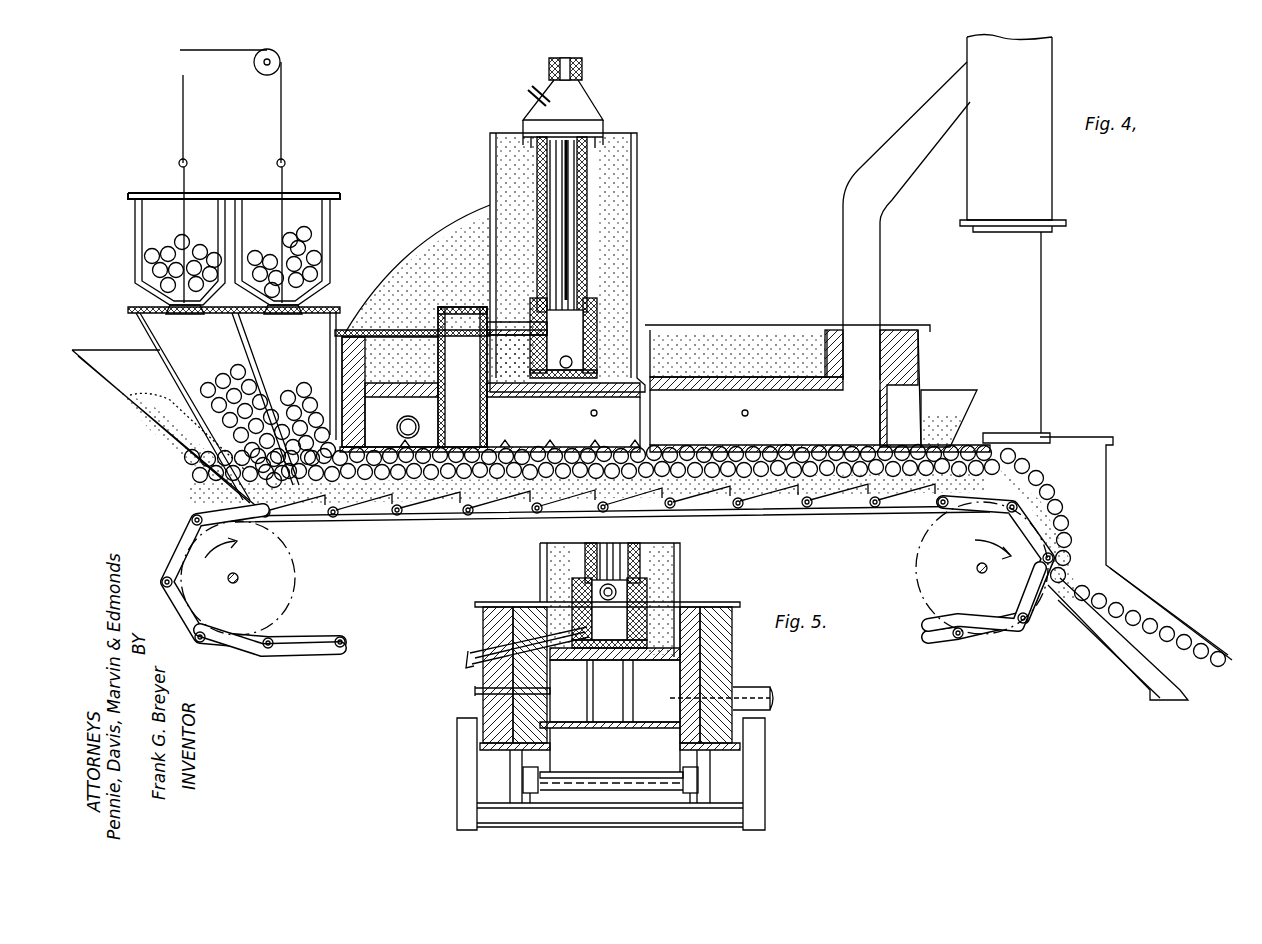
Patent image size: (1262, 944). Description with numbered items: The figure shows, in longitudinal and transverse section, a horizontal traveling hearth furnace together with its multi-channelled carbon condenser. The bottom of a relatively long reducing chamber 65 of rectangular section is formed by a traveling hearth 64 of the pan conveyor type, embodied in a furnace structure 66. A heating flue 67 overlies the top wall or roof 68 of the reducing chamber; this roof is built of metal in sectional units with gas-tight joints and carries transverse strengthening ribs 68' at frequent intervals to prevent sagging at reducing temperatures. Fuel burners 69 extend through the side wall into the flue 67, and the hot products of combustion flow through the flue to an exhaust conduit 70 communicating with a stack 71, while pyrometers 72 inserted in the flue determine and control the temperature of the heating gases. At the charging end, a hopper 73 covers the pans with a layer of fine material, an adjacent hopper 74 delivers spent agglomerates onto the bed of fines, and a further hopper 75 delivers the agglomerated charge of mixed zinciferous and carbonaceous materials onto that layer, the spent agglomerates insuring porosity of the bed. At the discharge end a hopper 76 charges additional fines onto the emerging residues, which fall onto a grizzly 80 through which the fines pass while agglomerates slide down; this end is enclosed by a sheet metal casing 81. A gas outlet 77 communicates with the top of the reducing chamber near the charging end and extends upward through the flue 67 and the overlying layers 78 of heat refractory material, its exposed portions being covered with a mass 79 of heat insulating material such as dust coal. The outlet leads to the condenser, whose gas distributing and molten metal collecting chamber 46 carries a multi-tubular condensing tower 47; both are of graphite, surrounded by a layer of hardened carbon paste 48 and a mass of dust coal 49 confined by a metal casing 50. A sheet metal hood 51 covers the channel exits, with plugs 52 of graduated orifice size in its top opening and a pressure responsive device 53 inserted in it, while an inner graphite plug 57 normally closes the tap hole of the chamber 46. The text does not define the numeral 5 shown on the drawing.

In FIG. 4, the rod 5 is at (570, 277).
In FIG. 4, the gas distributing and molten metal collecting chamber 46 is at (563, 349).
In FIG. 5, the gas distributing and molten metal collecting chamber 46 is at (609, 616).
In FIG. 4, the multi-tubular condensing tower 47 is at (565, 340).
In FIG. 5, the multi-tubular condensing tower 47 is at (625, 548).
In FIG. 4, the layer of hardened carbon paste 48 is at (587, 240).
In FIG. 5, the layer of hardened carbon paste 48 is at (588, 550).
In FIG. 4, the mass of dust coal 49 is at (605, 215).
In FIG. 5, the mass of dust coal 49 is at (553, 572).
In FIG. 4, the metal casing 50 is at (640, 175).
In FIG. 5, the metal casing 50 is at (682, 582).
In FIG. 4, the sheet metal hood 51 is at (600, 100).
In FIG. 4, the plugs 52 is at (549, 66).
In FIG. 4, the pressure responsive device 53 is at (548, 104).
In FIG. 4, the inner graphite plug 57 is at (575, 360).
In FIG. 4, the traveling hearth 64 is at (505, 505).
In FIG. 5, the traveling hearth 64 is at (565, 778).
In FIG. 4, the reducing chamber 65 is at (780, 450).
In FIG. 5, the reducing chamber 65 is at (615, 750).
In FIG. 4, the furnace structure 66 is at (920, 365).
In FIG. 4, the heating flue 67 is at (820, 421).
In FIG. 4, the top wall or roof 68 is at (490, 424).
In FIG. 5, the top wall or roof 68 is at (610, 703).
In FIG. 4, the transverse strengthening ribs 68' is at (555, 427).
In FIG. 5, the transverse strengthening ribs 68' is at (568, 703).
In FIG. 4, the fuel burners 69 is at (402, 420).
In FIG. 5, the fuel burners 69 is at (758, 690).
In FIG. 4, the exhaust conduit 70 is at (862, 270).
In FIG. 4, the stack 71 is at (1048, 178).
In FIG. 4, the pyrometers 72 is at (597, 415).
In FIG. 5, the pyrometers 72 is at (475, 692).
In FIG. 4, the hopper 73 is at (190, 432).
In FIG. 4, the hopper 74 is at (172, 332).
In FIG. 4, the hopper 75 is at (308, 376).
In FIG. 4, the hopper 76 is at (962, 395).
In FIG. 4, the gas outlet 77 is at (462, 377).
In FIG. 5, the gas outlet 77 is at (615, 691).
In FIG. 4, the layers of heat refractory material 78 is at (718, 338).
In FIG. 4, the mass of heat insulating material 79 is at (418, 285).
In FIG. 4, the grizzly 80 is at (1090, 630).
In FIG. 4, the sheet metal casing 81 is at (1108, 493).